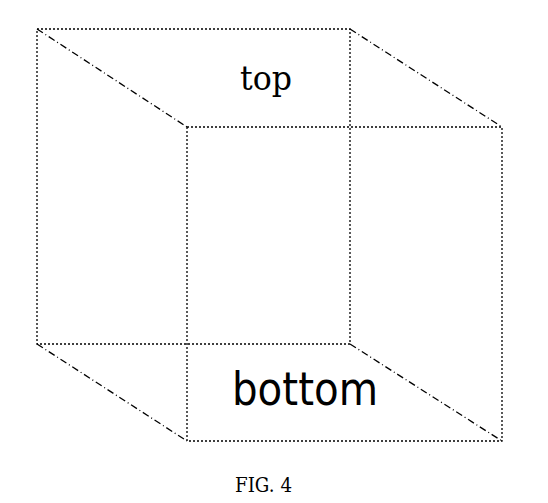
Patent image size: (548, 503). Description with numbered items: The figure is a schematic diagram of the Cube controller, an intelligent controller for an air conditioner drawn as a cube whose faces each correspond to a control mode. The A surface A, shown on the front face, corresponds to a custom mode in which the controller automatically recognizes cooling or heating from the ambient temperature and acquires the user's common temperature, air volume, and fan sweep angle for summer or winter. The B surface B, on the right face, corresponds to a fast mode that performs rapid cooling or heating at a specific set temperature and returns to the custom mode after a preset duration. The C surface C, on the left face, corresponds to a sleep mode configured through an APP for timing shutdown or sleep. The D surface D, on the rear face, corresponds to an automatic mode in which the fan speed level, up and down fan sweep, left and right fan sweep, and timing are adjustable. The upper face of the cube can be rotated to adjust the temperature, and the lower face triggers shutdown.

The A surface A is at (348, 284).
The B surface B is at (440, 253).
The C surface C is at (215, 211).
The D surface D is at (119, 238).